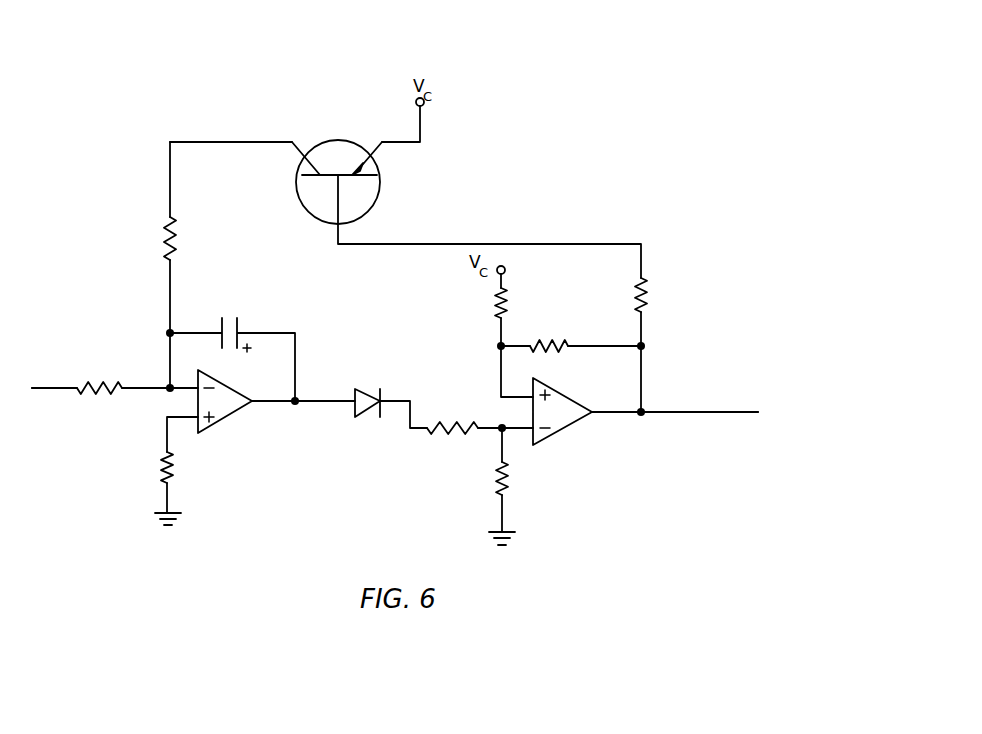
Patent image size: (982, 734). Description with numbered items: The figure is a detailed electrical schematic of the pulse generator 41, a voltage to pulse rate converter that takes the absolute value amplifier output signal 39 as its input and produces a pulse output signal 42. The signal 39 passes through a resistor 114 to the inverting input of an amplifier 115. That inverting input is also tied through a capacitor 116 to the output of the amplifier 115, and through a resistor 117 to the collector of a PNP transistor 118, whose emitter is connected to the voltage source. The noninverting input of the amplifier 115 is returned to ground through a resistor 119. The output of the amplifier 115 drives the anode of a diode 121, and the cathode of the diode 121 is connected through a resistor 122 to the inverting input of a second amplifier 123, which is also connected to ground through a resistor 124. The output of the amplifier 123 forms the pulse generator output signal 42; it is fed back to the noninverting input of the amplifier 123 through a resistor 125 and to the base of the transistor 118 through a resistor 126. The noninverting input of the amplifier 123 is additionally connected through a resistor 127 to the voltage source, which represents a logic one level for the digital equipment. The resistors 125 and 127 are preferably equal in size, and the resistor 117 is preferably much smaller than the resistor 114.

The pulse generator 41 is at (90, 168).
The absolute value amplifier output signal 39 is at (62, 388).
The pulse output signal 42 is at (688, 412).
The resistor 114 is at (90, 388).
The amplifier 115 is at (225, 382).
The capacitor 116 is at (240, 320).
The resistor 117 is at (178, 240).
The PNP transistor 118 is at (334, 140).
The resistor 119 is at (163, 464).
The diode 121 is at (355, 393).
The resistor 122 is at (432, 428).
The amplifier 123 is at (556, 432).
The resistor 124 is at (494, 479).
The resistor 125 is at (538, 340).
The resistor 126 is at (648, 298).
The resistor 127 is at (494, 311).